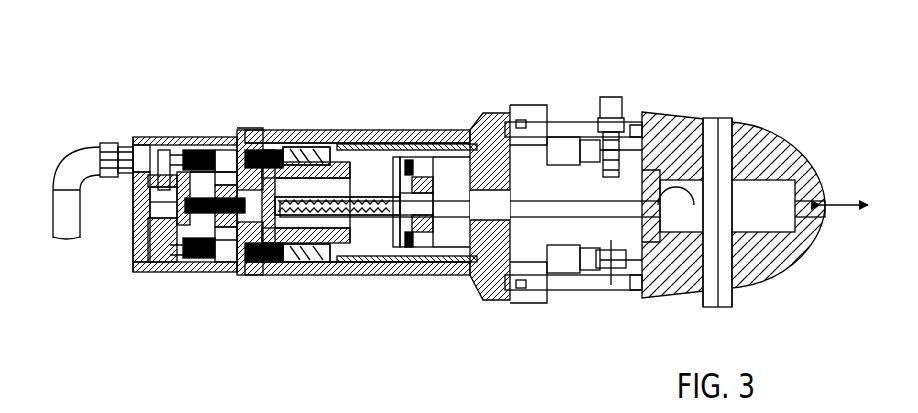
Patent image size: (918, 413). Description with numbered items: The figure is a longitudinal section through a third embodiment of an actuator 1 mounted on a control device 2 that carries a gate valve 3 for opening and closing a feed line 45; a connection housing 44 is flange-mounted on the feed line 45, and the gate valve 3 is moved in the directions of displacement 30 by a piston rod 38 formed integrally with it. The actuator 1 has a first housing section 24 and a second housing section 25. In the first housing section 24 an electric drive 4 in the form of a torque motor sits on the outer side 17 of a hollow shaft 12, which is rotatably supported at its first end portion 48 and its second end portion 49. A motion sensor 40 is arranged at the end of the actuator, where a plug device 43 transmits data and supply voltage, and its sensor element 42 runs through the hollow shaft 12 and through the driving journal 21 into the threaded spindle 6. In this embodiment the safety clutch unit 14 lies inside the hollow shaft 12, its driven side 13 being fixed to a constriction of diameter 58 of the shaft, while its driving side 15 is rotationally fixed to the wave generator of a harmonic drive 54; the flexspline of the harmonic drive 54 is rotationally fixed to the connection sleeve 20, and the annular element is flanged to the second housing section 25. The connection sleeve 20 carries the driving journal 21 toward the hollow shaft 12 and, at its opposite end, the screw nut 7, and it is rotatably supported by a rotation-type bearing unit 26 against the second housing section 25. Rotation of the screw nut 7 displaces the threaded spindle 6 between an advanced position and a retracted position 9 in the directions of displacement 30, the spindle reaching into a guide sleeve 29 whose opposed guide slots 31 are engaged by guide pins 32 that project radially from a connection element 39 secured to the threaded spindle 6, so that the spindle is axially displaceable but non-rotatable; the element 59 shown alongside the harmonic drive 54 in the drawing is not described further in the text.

The actuator 1 is at (332, 70).
The control device 2 is at (678, 100).
The gate valve 3 is at (767, 219).
The electric drive 4 is at (207, 128).
The threaded spindle 6 is at (317, 270).
The retracted position 9 is at (306, 204).
The screw nut 7 is at (371, 130).
The hollow shaft 12 is at (190, 270).
The driven side 13 is at (145, 273).
The safety clutch unit 14 is at (220, 270).
The driving side 15 is at (202, 270).
The outer side 17 is at (237, 130).
The connection sleeve 20 is at (282, 273).
The driving journal 21 is at (248, 272).
The first housing section 24 is at (167, 138).
The second housing section 25 is at (353, 130).
The rotation-type bearing unit 26 is at (323, 133).
The guide sleeve 29 is at (517, 140).
The directions of displacement 30 is at (845, 195).
The guide slots 31 is at (420, 140).
The guide pins 32 is at (388, 140).
The piston rod 38 is at (445, 273).
The connection element 39 is at (438, 140).
The motion sensor 40 is at (122, 217).
The sensor element 42 is at (388, 273).
The plug device 43 is at (117, 128).
The connection housing 44 is at (572, 122).
The feed line 45 is at (727, 137).
The first end portion 48 is at (162, 270).
The second end portion 49 is at (223, 133).
The harmonic drive 54 is at (337, 206).
The constriction of diameter 58 is at (163, 138).
The spindle 59 is at (277, 130).